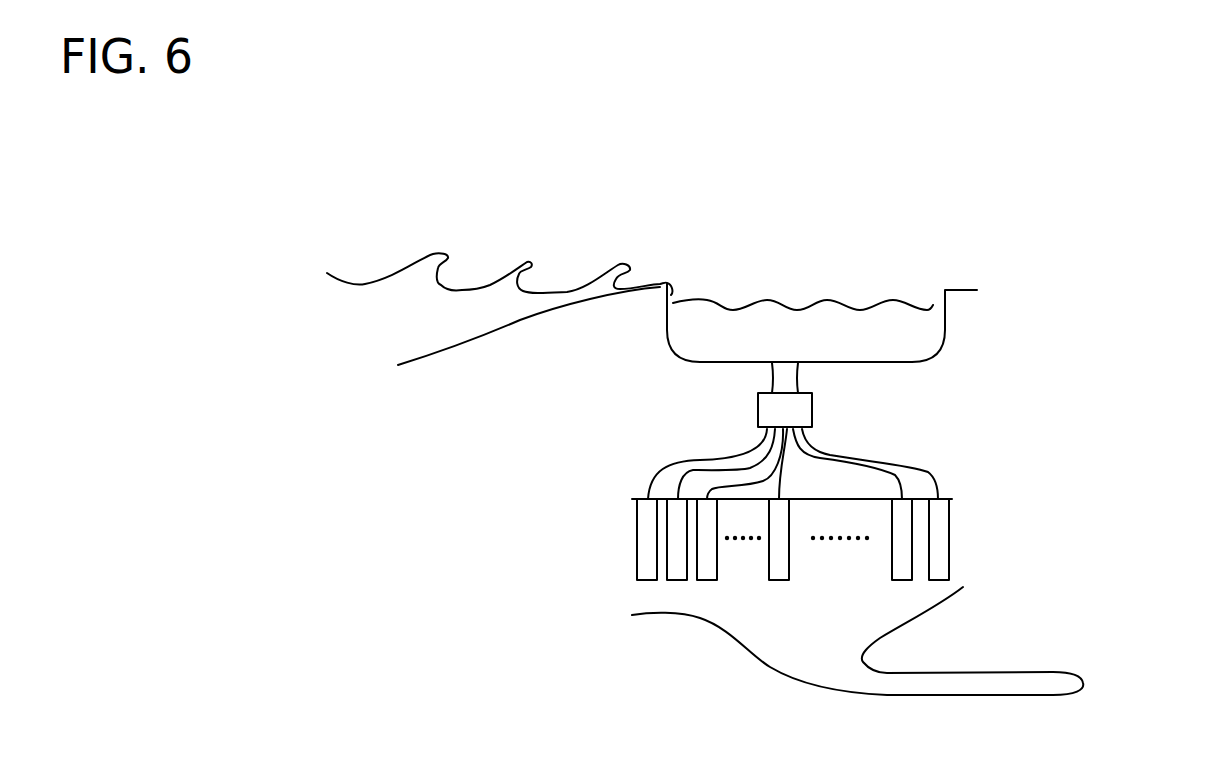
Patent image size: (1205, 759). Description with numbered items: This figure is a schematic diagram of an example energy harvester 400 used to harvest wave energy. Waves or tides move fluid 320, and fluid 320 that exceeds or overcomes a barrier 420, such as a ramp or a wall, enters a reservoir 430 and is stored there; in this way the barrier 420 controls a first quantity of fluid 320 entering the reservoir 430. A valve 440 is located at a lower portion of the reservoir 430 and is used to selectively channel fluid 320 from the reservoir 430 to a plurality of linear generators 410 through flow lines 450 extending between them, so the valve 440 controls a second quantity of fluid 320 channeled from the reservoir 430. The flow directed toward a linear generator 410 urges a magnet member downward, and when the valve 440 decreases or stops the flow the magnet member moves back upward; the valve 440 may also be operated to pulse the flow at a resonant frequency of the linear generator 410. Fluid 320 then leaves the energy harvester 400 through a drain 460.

The energy harvester 400 is at (333, 635).
The fluid 320 is at (357, 318).
The barrier 420 is at (557, 318).
The reservoir 430 is at (837, 327).
The valve 440 is at (812, 412).
The flow lines 450 is at (922, 467).
The linear generators 410 is at (637, 541).
The drain 460 is at (1082, 677).